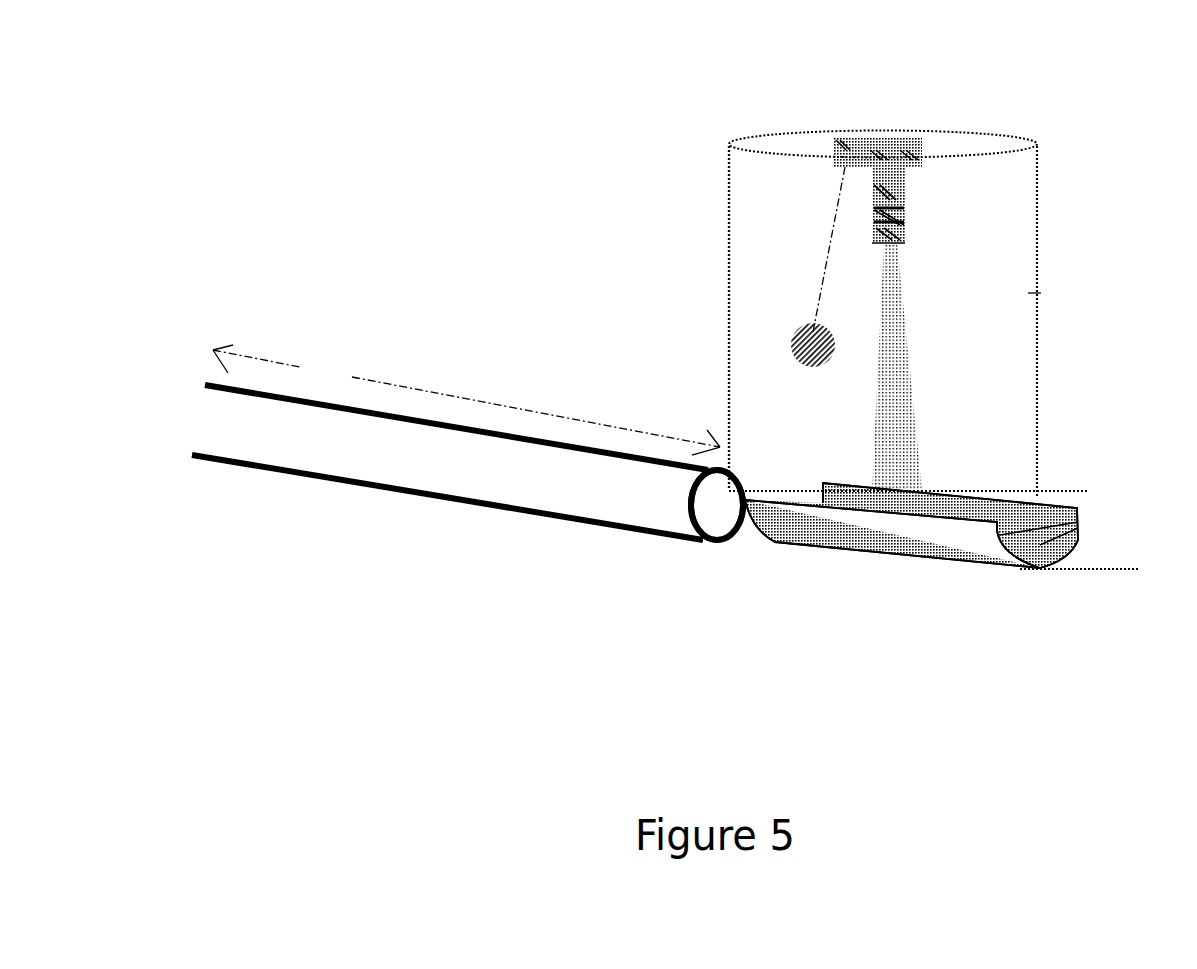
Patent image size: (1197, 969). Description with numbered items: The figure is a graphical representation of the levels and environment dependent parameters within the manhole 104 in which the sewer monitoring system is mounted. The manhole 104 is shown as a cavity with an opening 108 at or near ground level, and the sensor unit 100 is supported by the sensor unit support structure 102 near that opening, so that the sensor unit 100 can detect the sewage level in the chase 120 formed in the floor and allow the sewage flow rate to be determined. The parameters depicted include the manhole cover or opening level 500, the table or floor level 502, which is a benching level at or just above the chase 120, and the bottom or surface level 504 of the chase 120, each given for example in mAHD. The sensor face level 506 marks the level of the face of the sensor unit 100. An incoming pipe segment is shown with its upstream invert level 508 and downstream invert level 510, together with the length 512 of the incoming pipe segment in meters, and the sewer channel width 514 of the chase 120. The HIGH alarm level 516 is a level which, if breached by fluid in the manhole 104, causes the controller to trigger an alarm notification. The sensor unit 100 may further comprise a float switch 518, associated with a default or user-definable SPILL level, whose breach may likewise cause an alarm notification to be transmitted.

The sensor unit 100 is at (895, 200).
The sensor unit support structure 102 is at (877, 148).
The manhole 104 is at (728, 265).
The opening 108 is at (995, 150).
The chase 120 is at (967, 543).
The manhole cover or opening level 500 is at (1037, 145).
The table/floor level 502 is at (937, 492).
The bottom or surface level 504 is at (1104, 570).
The sensor face level 506 is at (905, 241).
The upstream invert level 508 is at (192, 448).
The downstream invert level 510 is at (710, 540).
The length of incoming pipe segment 512 is at (466, 400).
The sewer channel width 514 is at (1078, 545).
The HIGH alarm level 516 is at (922, 447).
The float switch 518 is at (812, 322).